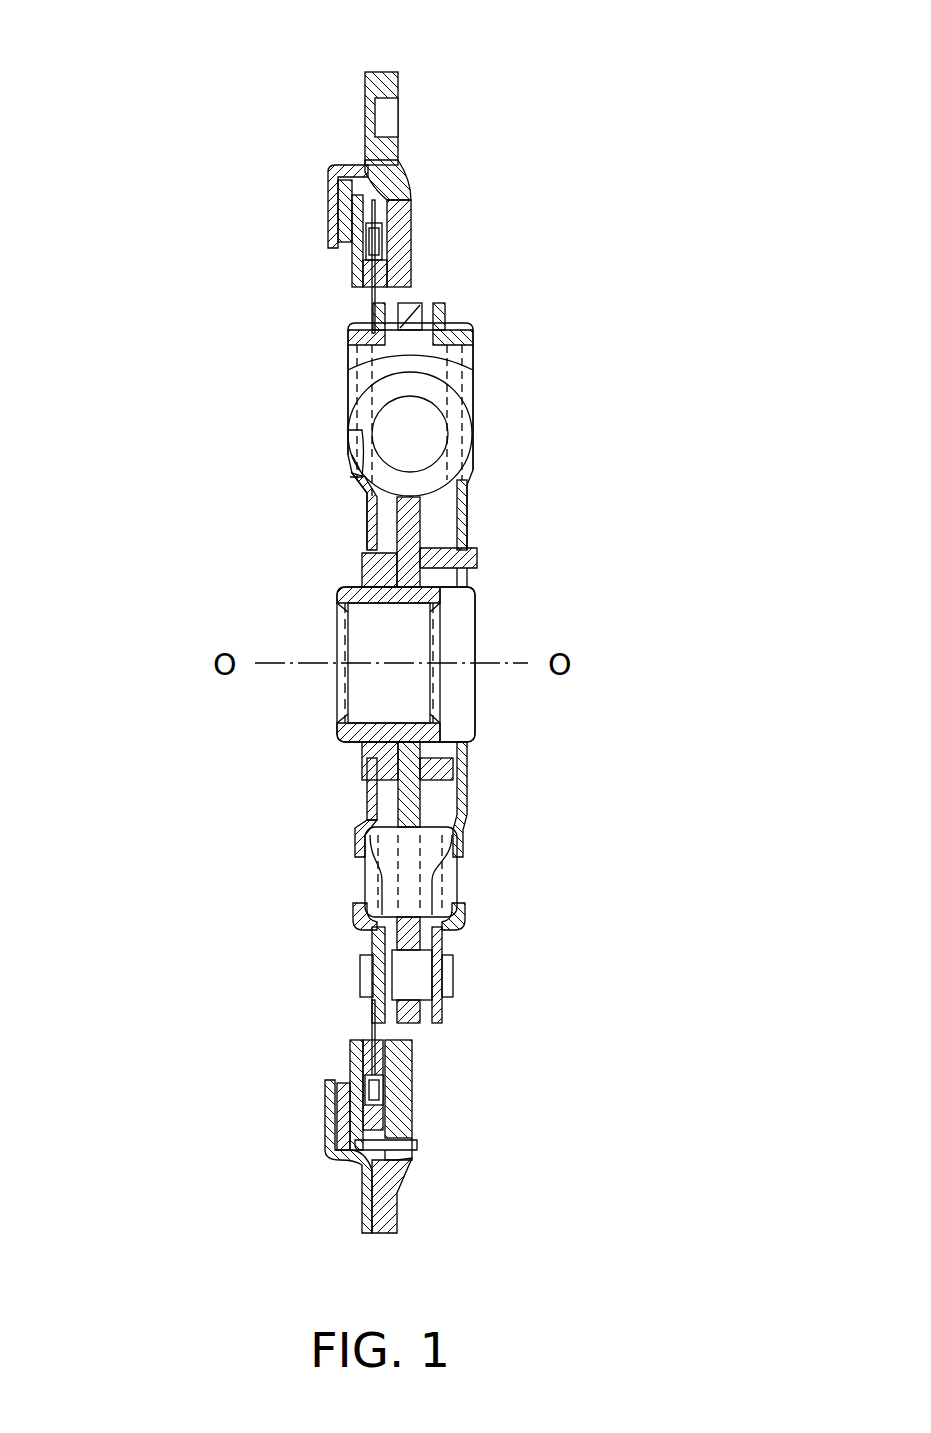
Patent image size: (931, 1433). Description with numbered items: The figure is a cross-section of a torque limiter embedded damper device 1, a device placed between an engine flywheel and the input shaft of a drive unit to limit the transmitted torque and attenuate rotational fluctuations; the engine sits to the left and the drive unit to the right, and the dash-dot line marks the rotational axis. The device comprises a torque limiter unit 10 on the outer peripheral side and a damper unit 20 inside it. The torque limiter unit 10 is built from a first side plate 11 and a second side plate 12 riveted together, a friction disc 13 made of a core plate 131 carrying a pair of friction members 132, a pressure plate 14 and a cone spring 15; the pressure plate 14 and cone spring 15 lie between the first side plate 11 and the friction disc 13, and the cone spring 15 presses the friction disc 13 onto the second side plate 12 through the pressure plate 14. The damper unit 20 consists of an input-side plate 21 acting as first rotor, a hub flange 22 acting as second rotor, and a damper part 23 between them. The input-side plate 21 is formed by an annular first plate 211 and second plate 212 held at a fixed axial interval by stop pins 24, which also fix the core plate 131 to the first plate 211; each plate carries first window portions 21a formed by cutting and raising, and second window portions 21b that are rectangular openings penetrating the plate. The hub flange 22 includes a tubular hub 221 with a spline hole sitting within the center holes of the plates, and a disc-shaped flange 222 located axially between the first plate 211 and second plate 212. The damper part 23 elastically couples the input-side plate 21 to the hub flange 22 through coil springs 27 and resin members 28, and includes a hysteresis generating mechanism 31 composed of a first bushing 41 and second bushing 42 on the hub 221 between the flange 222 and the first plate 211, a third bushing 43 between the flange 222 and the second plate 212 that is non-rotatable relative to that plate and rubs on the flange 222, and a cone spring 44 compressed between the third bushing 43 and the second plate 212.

The torque limiter embedded damper device 1 is at (131, 205).
The torque limiter unit 10 is at (421, 79).
The first side plate 11 is at (337, 217).
The second side plate 12 is at (410, 185).
The friction disc 13 is at (412, 207).
The pressure plate 14 is at (353, 273).
The cone spring 15 is at (348, 225).
The damper unit 20 is at (526, 351).
The input-side plate 21 is at (483, 310).
The first window portions 21a is at (357, 374).
The second window portions 21b is at (360, 860).
The hub flange 22 is at (320, 580).
The hub 221 is at (475, 600).
The flange 222 is at (413, 522).
The damper part 23 is at (493, 443).
The stop pins 24 is at (420, 983).
The coil springs 27 is at (357, 453).
The resin members 28 is at (370, 883).
The hysteresis generating mechanism 31 is at (346, 771).
The first bushing 41 is at (363, 770).
The second bushing 42 is at (390, 742).
The third bushing 43 is at (460, 782).
The cone spring 44 is at (465, 788).
The core plate 131 is at (373, 1013).
The friction members 132 is at (327, 1095).
The first plate 211 is at (367, 930).
The second plate 212 is at (467, 923).